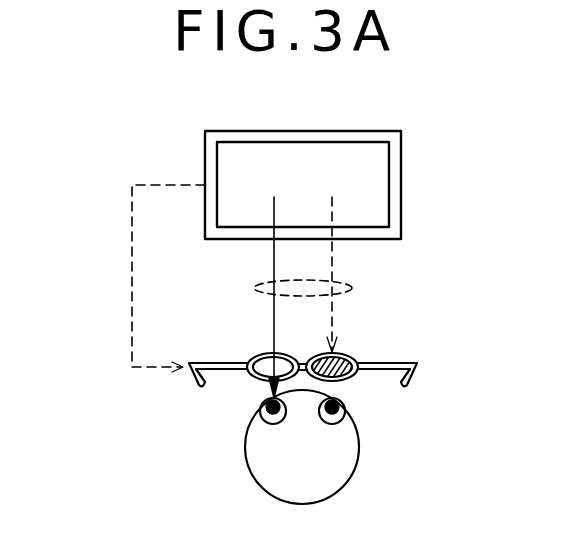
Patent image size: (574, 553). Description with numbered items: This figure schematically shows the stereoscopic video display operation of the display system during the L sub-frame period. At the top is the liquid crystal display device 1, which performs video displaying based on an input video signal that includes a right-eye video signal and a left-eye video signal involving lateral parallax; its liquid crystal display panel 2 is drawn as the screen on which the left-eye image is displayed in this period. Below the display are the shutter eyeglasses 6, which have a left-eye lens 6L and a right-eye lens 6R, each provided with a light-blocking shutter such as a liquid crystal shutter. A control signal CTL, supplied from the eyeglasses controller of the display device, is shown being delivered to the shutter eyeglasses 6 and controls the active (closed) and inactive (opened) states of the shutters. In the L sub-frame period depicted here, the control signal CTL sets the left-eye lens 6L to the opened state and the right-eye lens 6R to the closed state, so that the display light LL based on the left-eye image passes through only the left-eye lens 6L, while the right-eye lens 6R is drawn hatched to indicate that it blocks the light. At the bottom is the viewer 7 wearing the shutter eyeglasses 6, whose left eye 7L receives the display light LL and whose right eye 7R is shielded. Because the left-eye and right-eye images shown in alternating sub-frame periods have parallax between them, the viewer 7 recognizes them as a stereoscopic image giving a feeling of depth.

The liquid crystal display device 1 is at (420, 137).
The liquid crystal display panel 2 is at (378, 184).
The shutter eyeglasses 6 is at (346, 357).
The left-eye lens 6L is at (262, 364).
The right-eye lens 6R is at (440, 371).
The viewer 7 is at (313, 447).
The left eye 7L is at (252, 408).
The right eye 7R is at (353, 408).
The control signal CTL is at (130, 278).
The display light based on the left-eye image LL is at (356, 292).